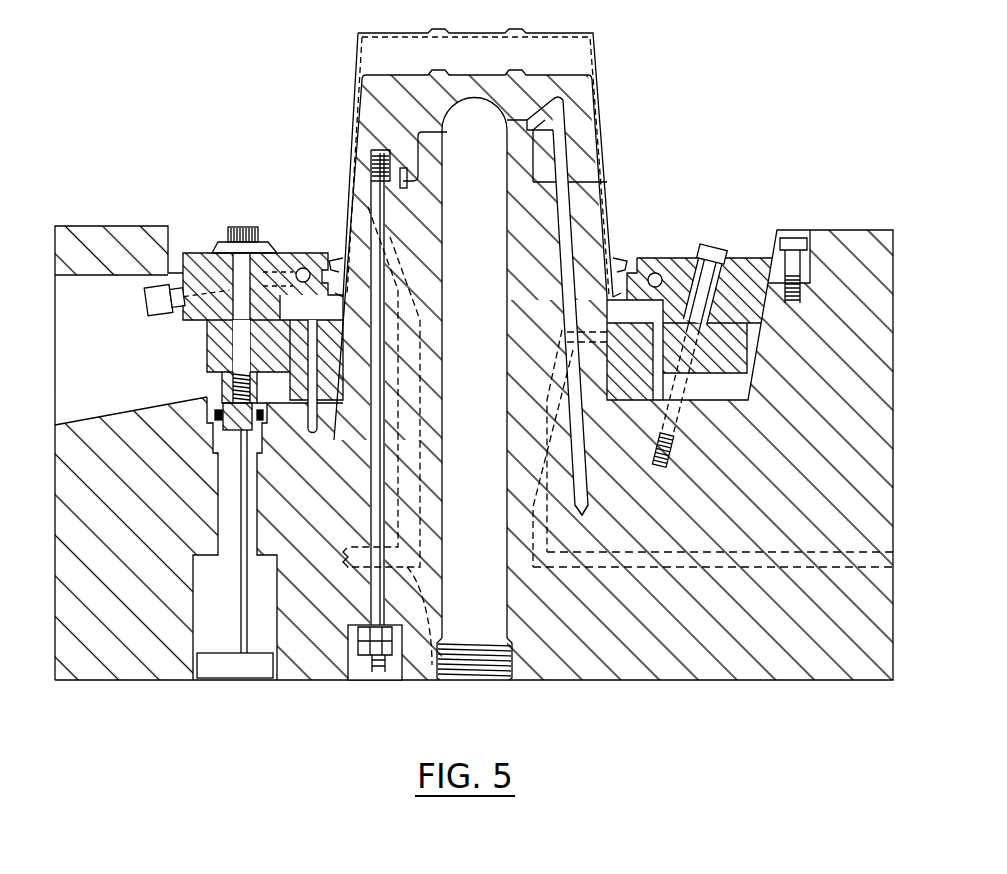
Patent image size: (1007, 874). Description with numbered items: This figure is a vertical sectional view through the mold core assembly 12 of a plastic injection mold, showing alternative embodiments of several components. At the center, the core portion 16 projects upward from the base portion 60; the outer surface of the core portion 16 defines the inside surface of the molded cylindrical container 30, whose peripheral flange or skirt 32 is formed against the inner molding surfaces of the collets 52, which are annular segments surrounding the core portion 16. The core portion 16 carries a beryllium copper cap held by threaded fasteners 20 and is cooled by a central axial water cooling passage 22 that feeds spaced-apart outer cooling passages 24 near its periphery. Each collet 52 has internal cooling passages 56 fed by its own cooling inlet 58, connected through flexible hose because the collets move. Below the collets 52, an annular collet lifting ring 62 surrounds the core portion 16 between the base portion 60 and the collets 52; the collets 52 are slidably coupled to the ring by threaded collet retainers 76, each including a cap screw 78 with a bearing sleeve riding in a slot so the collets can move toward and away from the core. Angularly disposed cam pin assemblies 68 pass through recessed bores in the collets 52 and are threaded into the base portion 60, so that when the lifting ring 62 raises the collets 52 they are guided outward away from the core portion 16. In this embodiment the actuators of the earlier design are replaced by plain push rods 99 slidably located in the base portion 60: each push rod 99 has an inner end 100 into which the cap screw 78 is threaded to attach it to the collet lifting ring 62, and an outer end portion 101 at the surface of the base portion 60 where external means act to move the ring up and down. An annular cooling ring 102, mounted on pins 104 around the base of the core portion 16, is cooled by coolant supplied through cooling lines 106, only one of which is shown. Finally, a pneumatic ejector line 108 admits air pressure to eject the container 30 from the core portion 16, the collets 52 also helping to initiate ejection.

The mold core assembly 12 is at (57, 547).
The core portion 16 is at (585, 196).
The threaded fasteners 20 is at (374, 572).
The central axial water cooling passage 22 is at (462, 404).
The outer cooling passages 24 is at (560, 122).
The cylindrical container 30 is at (598, 60).
The peripheral flange or skirt 32 is at (327, 260).
The collets 52 is at (196, 253).
The internal cooling passages 56 is at (308, 270).
The cooling inlet 58 is at (146, 297).
The base portion 60 is at (773, 660).
The collet lifting ring 62 is at (207, 352).
The cam pin assemblies 68 is at (721, 241).
The collet retainers 76 is at (232, 228).
The cap screw 78 is at (244, 227).
The push rods 99 is at (227, 633).
The inner end 100 is at (222, 386).
The outer end portion 101 is at (240, 668).
The annular cooling ring 102 is at (578, 440).
The pins 104 is at (313, 432).
The cooling lines 106 is at (809, 570).
The pneumatic ejector line 108 is at (432, 665).